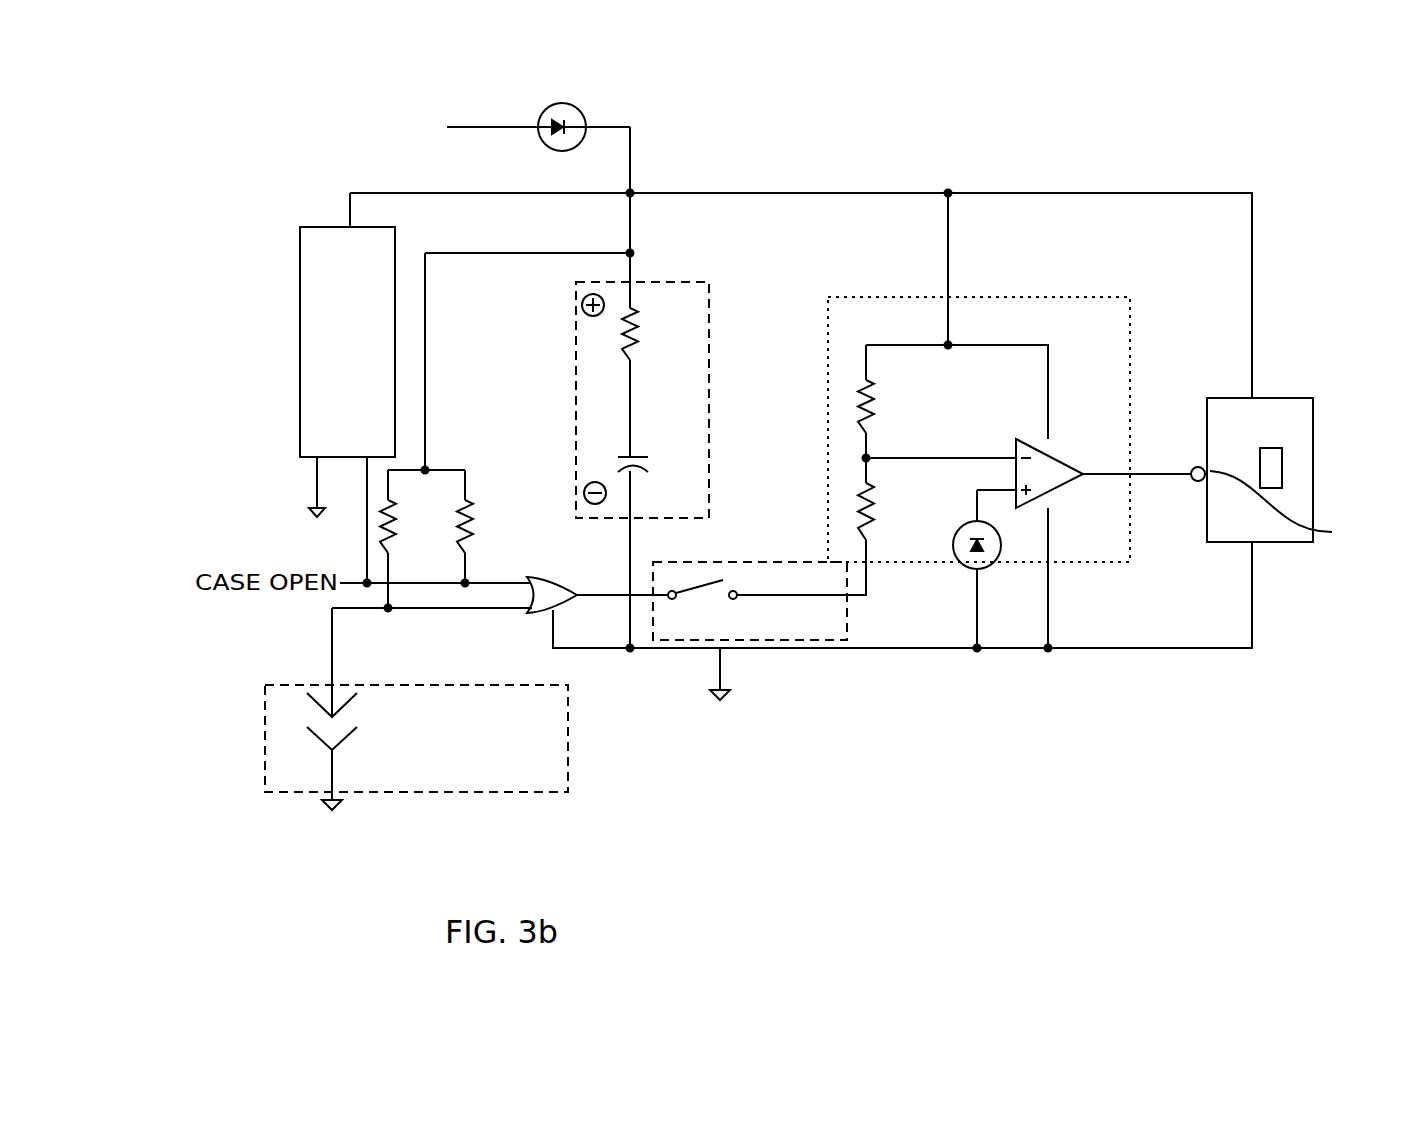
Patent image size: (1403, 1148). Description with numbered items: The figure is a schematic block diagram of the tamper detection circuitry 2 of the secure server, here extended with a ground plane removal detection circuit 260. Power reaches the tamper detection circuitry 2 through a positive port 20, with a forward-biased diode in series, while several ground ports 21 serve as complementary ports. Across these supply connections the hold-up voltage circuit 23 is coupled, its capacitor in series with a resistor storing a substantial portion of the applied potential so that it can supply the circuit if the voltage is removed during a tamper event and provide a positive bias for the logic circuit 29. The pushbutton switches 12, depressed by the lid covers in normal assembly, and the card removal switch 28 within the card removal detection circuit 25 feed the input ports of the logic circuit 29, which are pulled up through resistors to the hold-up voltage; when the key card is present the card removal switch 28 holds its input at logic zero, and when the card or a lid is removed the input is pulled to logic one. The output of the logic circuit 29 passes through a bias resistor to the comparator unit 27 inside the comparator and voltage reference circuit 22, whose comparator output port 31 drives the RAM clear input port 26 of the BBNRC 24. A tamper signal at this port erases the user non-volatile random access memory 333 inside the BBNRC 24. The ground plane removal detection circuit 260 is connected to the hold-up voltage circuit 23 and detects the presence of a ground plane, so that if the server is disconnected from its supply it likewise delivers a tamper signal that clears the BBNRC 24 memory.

The tamper detection circuitry 2 is at (913, 769).
The pushbutton switches 12 is at (685, 641).
The positive port 20 is at (468, 127).
The ground ports 21 is at (316, 512).
The comparator and voltage reference circuit 22 is at (1010, 297).
The hold-up voltage circuit 23 is at (653, 282).
The BBNRC 24 is at (1268, 398).
The card removal detection circuit 25 is at (477, 793).
The RAM clear input port 26 is at (1288, 508).
The comparator unit 27 is at (1057, 457).
The card removal switch 28 is at (325, 728).
The logic circuit 29 is at (556, 578).
The comparator output port 31 is at (1085, 476).
The ground plane removal detection circuit 260 is at (300, 344).
The non-volatile random access memory 333 is at (1268, 462).